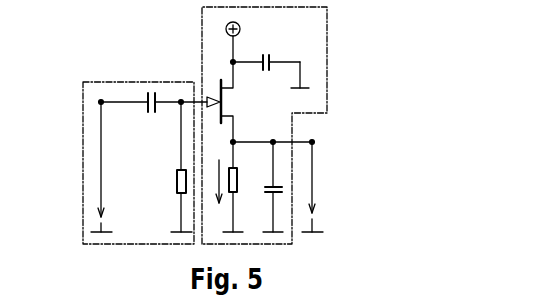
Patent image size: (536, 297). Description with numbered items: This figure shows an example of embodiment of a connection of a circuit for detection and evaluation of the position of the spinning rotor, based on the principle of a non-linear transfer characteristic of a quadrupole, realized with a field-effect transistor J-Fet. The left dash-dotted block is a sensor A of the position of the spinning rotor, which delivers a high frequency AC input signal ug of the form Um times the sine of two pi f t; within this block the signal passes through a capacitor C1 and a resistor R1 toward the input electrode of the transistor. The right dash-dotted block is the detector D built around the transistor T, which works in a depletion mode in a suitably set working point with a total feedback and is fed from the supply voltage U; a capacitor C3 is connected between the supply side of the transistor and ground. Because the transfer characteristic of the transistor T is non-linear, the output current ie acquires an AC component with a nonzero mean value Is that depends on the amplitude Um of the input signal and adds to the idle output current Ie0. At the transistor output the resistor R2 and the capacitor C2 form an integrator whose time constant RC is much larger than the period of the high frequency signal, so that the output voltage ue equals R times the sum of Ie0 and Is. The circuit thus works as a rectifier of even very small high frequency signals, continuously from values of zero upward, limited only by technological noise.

The sensor of the position of the spinning rotor A is at (90, 122).
The detector D is at (317, 55).
The transistor J-Fet T is at (226, 102).
The supply voltage U is at (245, 42).
The capacitor C1 is at (148, 113).
The capacitor C2 is at (265, 187).
The capacitor C3 is at (271, 75).
The resistor R1 is at (173, 167).
The resistor R2 is at (240, 187).
The input AC signal ug is at (107, 167).
The output current ie is at (214, 180).
The output voltage ue is at (317, 187).